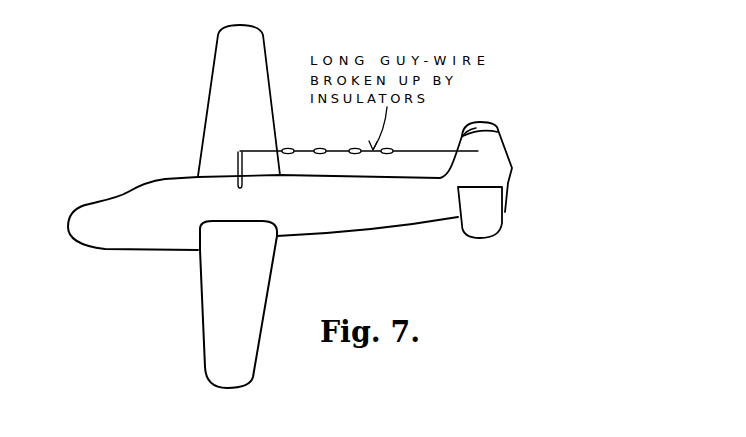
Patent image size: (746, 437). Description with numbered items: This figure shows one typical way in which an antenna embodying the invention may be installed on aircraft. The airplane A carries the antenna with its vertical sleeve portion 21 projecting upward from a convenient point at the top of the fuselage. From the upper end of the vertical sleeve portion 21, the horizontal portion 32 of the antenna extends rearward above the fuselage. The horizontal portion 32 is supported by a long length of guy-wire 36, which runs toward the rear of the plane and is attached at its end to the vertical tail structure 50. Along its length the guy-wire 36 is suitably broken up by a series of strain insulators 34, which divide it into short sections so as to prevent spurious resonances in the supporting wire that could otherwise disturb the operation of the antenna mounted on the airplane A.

The airplane A is at (155, 250).
The vertical sleeve portion 21 is at (237, 161).
The horizontal portion 32 is at (254, 150).
The strain insulators 34 is at (292, 148).
The guy-wire 36 is at (353, 120).
The vertical tail structure 50 is at (463, 136).